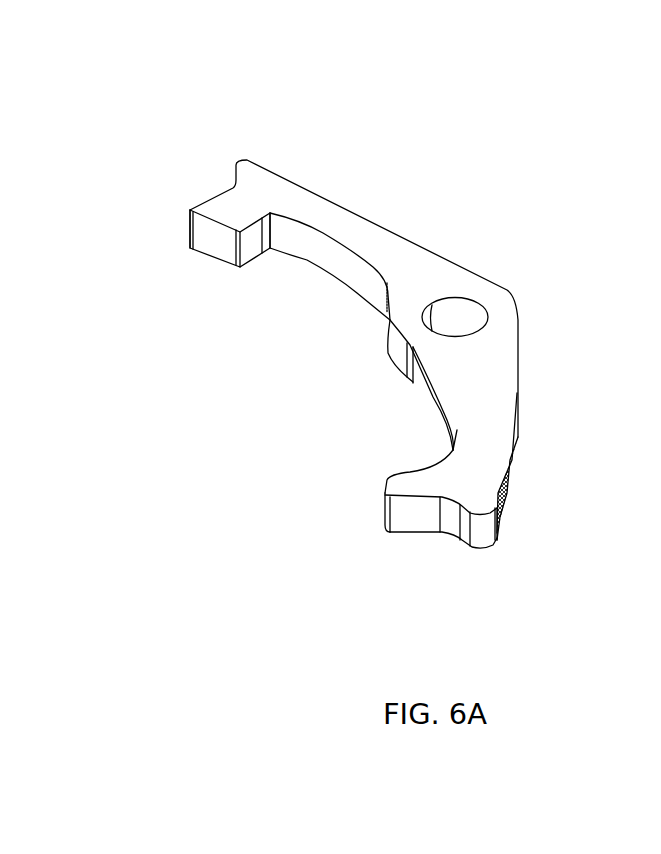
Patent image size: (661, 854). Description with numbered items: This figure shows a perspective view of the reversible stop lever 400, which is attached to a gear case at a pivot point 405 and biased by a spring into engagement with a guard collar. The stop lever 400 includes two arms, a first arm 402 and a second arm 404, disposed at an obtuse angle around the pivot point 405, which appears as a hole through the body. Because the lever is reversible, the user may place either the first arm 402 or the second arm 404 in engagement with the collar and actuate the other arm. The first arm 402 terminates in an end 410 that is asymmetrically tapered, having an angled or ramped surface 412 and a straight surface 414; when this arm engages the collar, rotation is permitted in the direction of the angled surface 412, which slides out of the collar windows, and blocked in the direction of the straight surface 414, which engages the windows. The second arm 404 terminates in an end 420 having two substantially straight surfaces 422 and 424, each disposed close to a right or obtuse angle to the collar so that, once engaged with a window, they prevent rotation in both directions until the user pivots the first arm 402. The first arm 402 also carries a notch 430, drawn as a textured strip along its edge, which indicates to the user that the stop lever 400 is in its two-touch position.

The stop lever 400 is at (414, 131).
The first arm 402 is at (520, 437).
The second arm 404 is at (302, 186).
The pivot point 405 is at (472, 302).
The end 410 is at (380, 549).
The angled surface 412 is at (400, 462).
The straight surface 414 is at (418, 522).
The end 420 is at (207, 300).
The straight surface 422 is at (202, 205).
The straight surface 424 is at (250, 257).
The notch 430 is at (519, 495).